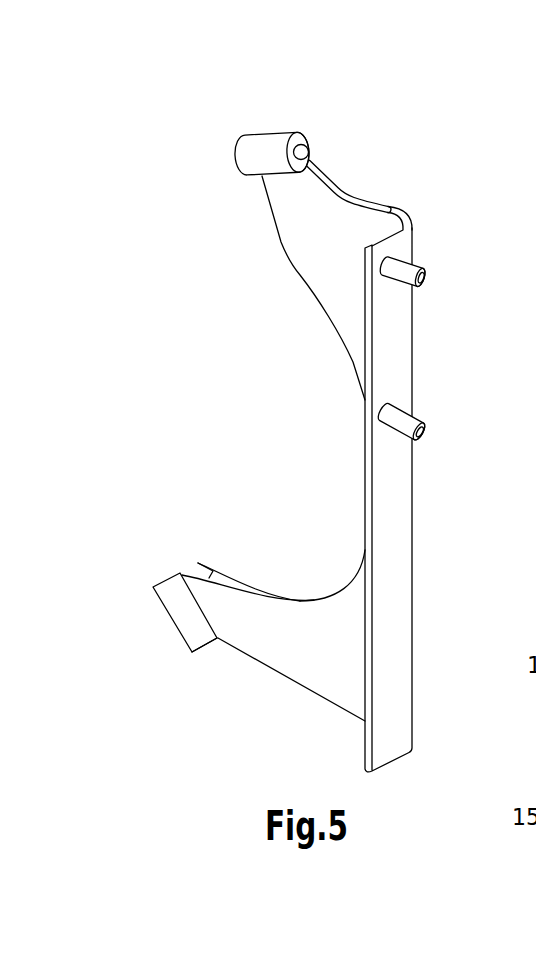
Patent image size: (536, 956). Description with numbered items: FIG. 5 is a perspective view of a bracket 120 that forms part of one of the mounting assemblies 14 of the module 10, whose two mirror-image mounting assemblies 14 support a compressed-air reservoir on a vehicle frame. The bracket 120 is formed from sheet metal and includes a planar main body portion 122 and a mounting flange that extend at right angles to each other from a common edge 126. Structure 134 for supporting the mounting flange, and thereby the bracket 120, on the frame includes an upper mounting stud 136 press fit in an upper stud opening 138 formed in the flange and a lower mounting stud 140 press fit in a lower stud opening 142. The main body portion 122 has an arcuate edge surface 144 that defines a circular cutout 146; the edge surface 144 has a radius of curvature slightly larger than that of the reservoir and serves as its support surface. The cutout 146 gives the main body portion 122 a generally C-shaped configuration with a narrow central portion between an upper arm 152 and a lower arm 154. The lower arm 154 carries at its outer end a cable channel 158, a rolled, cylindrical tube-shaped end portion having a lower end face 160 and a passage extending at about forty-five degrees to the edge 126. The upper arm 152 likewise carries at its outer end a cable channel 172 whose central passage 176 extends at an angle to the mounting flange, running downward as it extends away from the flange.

The module 10 is at (206, 362).
The mounting assembly 14 is at (202, 407).
The bracket 120 is at (251, 651).
The main body portion 122 is at (309, 585).
The common edge 126 is at (410, 222).
The structure for supporting the mounting flange 134 is at (457, 354).
The upper mounting stud 136 is at (428, 277).
The upper stud opening 138 is at (393, 257).
The lower mounting stud 140 is at (408, 427).
The lower stud opening 142 is at (402, 410).
The arcuate edge surface 144 is at (240, 589).
The circular cutout 146 is at (316, 449).
The upper arm 152 is at (322, 270).
The lower arm 154 is at (318, 653).
The cable channel 158 is at (173, 628).
The lower end face 160 is at (205, 647).
The cable channel 172 is at (262, 132).
The passage 176 is at (302, 152).